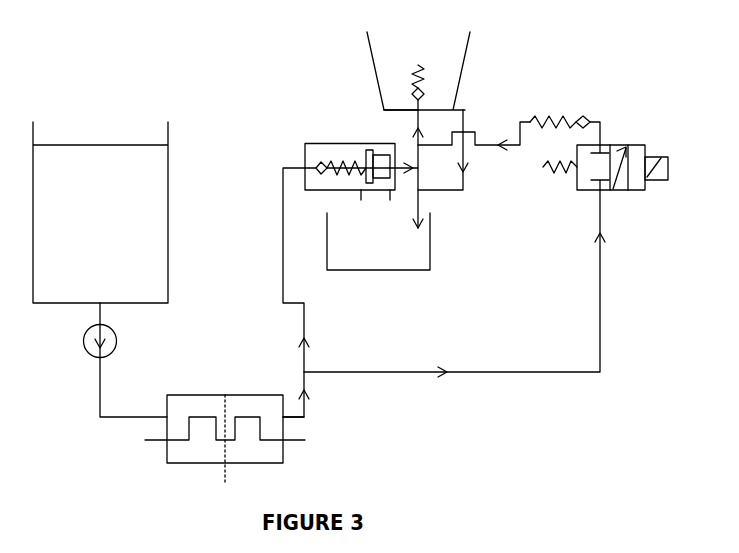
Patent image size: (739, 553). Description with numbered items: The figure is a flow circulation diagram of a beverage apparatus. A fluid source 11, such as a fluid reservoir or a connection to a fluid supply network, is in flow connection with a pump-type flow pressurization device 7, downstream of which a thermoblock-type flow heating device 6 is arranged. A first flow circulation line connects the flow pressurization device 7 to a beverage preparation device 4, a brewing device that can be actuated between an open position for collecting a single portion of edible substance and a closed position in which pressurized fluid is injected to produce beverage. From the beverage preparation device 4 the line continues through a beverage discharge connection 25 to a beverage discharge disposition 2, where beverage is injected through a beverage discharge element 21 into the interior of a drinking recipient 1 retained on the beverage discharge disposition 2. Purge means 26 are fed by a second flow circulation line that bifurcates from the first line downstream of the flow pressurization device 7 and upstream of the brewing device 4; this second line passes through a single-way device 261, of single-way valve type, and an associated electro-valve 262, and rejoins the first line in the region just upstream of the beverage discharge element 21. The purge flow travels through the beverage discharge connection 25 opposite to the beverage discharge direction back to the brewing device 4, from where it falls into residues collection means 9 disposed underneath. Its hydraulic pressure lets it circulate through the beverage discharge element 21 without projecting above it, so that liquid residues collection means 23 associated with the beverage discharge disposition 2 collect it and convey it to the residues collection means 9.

The drinking recipient 1 is at (418, 55).
The beverage discharge disposition 2 is at (372, 87).
The beverage discharge element 21 is at (432, 117).
The beverage discharge connection 25 is at (409, 161).
The beverage preparation device 4 is at (341, 157).
The liquid residues collection means 23 is at (474, 150).
The residues collection means 9 is at (378, 241).
The purge means 26 is at (617, 94).
The single-way device 261 is at (570, 108).
The electro-valve 262 is at (614, 153).
The fluid source 11 is at (100, 206).
The flow pressurization device 7 is at (109, 360).
The flow heating device 6 is at (225, 422).